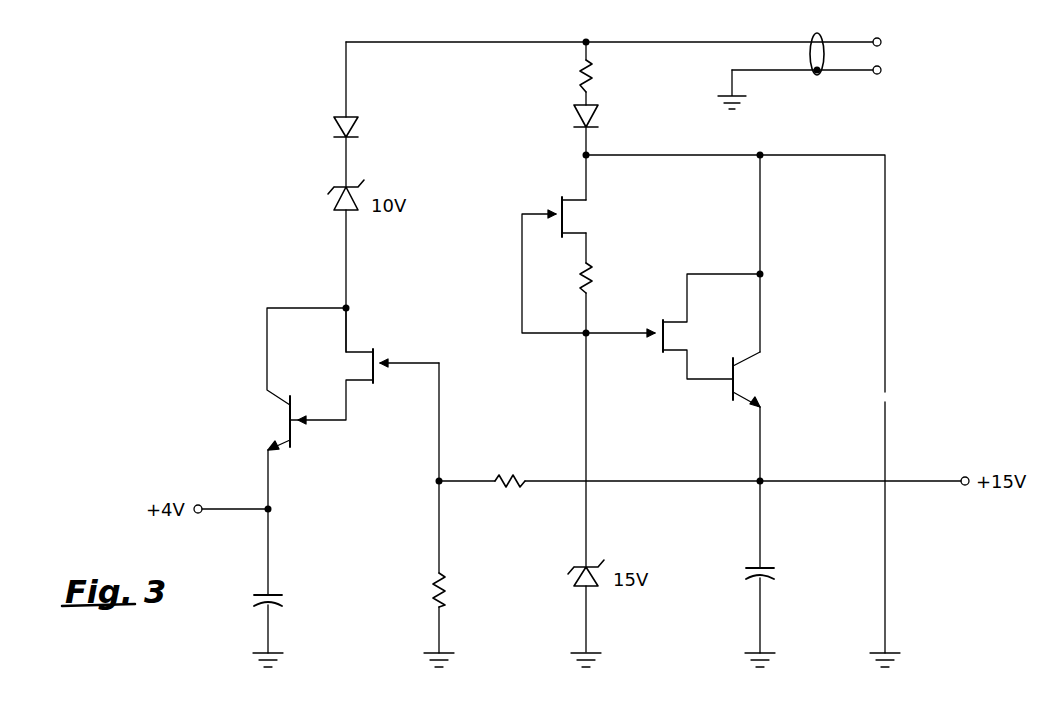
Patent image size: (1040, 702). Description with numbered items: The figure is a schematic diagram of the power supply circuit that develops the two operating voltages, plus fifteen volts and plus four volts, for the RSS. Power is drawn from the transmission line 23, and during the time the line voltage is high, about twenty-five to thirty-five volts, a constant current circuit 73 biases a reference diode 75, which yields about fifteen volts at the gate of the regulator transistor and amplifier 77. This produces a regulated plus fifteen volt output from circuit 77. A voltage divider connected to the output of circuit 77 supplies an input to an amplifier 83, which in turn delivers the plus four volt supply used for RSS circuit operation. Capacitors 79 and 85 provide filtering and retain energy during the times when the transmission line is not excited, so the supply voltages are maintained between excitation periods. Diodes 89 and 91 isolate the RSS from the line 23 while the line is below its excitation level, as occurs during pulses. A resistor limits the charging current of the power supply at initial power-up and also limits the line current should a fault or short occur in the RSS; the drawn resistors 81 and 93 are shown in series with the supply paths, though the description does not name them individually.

The line 23 is at (822, 38).
The resistor 93 is at (596, 66).
The diode 91 is at (598, 108).
The diode 89 is at (356, 124).
The constant current circuit 73 is at (566, 281).
The regulator transistor and amplifier 77 is at (730, 333).
The amplifier 83 is at (316, 366).
The reference diode 75 is at (597, 566).
The capacitor 79 is at (766, 568).
The capacitor 85 is at (278, 596).
The resistor 81 is at (499, 491).